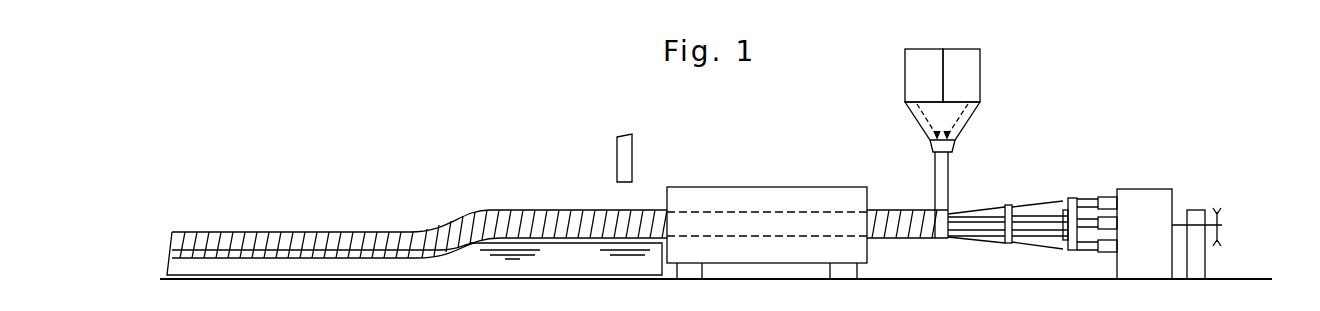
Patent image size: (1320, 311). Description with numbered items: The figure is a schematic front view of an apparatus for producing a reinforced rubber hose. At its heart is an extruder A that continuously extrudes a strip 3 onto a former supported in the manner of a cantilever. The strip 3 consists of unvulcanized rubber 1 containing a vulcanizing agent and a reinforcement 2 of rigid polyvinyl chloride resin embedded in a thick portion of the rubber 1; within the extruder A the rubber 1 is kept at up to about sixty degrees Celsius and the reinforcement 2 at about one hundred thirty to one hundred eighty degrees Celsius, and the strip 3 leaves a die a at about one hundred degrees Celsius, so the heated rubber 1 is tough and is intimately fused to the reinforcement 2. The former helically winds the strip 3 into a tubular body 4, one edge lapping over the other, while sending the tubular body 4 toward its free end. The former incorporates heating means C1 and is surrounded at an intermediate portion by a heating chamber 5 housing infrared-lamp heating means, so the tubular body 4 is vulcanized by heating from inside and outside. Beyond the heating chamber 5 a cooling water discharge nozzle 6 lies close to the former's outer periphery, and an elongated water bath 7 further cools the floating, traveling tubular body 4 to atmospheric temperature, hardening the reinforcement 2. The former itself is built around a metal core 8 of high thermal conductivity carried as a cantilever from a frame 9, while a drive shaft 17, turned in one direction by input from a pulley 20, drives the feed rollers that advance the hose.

The extruder A is at (975, 49).
The unvulcanized rubber 1 is at (906, 72).
The reinforcement 2 is at (973, 73).
The die a is at (950, 147).
The strip 3 is at (944, 188).
The tubular body 4 is at (906, 247).
The heating chamber 5 is at (742, 187).
The heating means C1 is at (782, 212).
The cooling water discharge nozzle 6 is at (617, 160).
The water bath 7 is at (485, 265).
The metal core 8 is at (1036, 232).
The frame 9 is at (1137, 268).
The drive shaft 17 is at (1182, 220).
The pulley 20 is at (1220, 217).